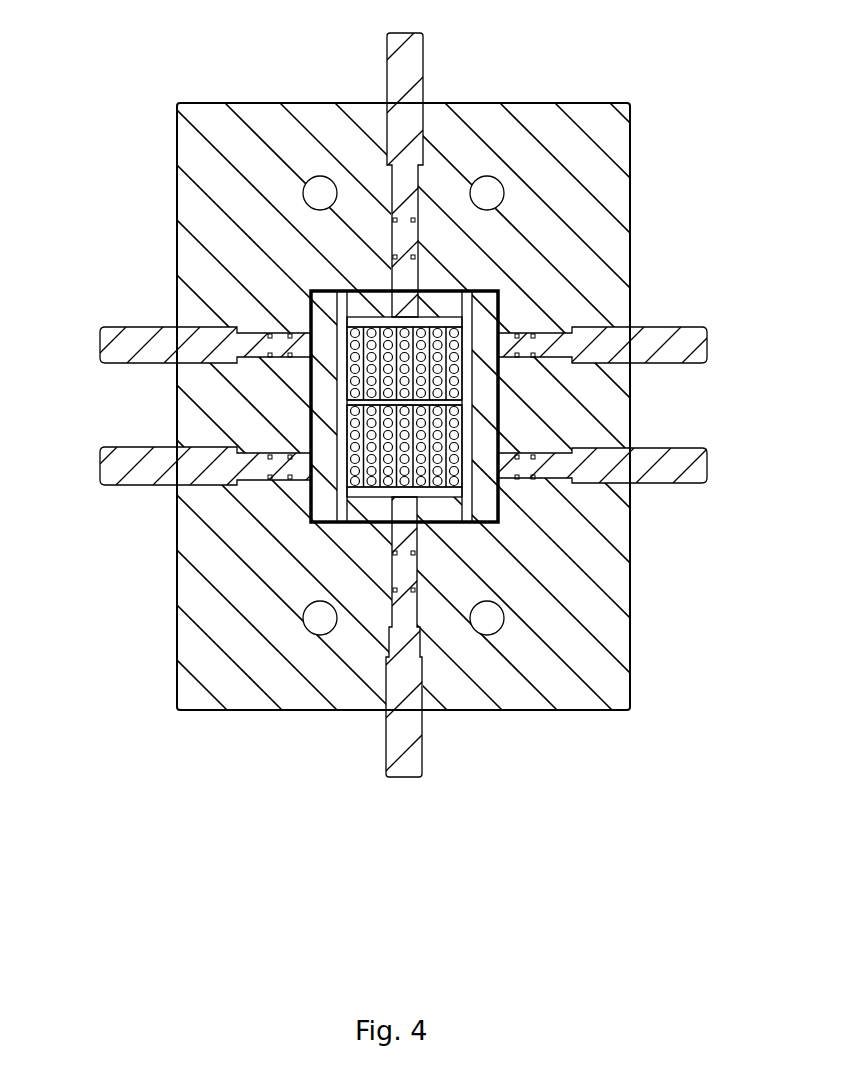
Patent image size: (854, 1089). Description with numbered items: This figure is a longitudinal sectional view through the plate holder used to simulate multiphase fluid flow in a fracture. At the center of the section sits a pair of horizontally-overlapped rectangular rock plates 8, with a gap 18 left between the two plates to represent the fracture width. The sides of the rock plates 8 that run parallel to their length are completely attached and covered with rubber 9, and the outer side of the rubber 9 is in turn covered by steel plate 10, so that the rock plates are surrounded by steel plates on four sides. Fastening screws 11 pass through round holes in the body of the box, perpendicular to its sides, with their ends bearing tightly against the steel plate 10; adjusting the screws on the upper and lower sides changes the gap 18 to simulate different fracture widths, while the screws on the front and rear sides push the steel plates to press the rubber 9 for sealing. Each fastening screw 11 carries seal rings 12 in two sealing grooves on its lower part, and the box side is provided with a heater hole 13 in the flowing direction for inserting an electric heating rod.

The rectangular rock plates 8 is at (347, 380).
The rubber 9 is at (347, 415).
The steel plate 10 is at (347, 434).
The fastening screws 11 is at (423, 53).
The seal rings 12 is at (392, 220).
The heater hole 13 is at (489, 192).
The gap 18 is at (463, 407).